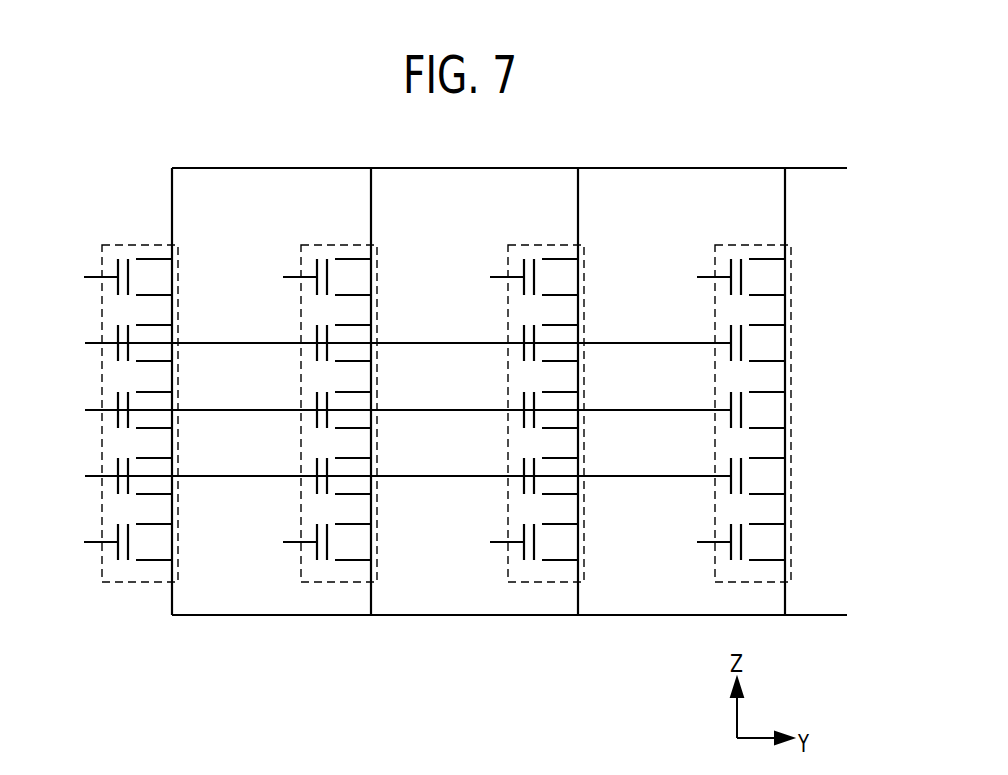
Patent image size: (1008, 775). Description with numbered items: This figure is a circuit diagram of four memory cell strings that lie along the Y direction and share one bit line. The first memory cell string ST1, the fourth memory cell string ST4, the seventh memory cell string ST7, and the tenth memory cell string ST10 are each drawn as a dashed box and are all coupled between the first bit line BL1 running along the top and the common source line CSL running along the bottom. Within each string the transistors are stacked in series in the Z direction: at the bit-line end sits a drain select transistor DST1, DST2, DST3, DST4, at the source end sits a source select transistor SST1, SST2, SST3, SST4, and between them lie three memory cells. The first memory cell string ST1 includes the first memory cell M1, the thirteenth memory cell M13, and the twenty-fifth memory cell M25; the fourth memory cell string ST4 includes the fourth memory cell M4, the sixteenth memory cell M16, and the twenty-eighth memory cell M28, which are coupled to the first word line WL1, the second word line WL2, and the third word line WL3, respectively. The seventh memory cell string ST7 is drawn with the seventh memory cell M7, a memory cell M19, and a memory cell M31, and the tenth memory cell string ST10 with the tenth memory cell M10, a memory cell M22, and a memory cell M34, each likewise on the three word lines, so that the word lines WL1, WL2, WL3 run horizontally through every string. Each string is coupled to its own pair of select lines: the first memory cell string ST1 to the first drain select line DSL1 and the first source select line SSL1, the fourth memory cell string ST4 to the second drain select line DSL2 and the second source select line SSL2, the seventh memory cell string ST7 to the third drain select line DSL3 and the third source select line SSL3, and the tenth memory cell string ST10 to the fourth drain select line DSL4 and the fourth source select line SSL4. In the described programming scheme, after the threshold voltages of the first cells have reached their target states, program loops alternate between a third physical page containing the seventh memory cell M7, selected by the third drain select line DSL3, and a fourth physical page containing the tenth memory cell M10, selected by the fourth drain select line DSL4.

The first bit line BL1 is at (526, 172).
The common source line CSL is at (526, 618).
The first memory cell string ST1 is at (140, 243).
The fourth memory cell string ST4 is at (340, 243).
The seventh memory cell string ST7 is at (545, 243).
The tenth memory cell string ST10 is at (755, 243).
The drain select transistor DST1 is at (168, 277).
The drain select transistor DST2 is at (367, 277).
The drain select transistor DST3 is at (574, 277).
The drain select transistor DST4 is at (781, 277).
The source select transistor SST1 is at (168, 542).
The source select transistor SST2 is at (367, 542).
The source select transistor SST3 is at (574, 542).
The source select transistor SST4 is at (781, 542).
The first memory cell M1 is at (161, 472).
The fourth memory cell M4 is at (360, 472).
The seventh memory cell M7 is at (567, 472).
The tenth memory cell M10 is at (779, 472).
The thirteenth memory cell M13 is at (166, 406).
The sixteenth memory cell M16 is at (365, 406).
The memory cell transistor M19 is at (572, 406).
The memory cell transistor M22 is at (779, 406).
The twenty-fifth memory cell M25 is at (166, 340).
The twenty-eighth memory cell M28 is at (365, 340).
The memory cell transistor M31 is at (572, 340).
The memory cell transistor M34 is at (779, 340).
The first drain select line DSL1 is at (81, 277).
The second drain select line DSL2 is at (279, 277).
The third drain select line DSL3 is at (486, 277).
The fourth drain select line DSL4 is at (693, 277).
The first source select line SSL1 is at (82, 542).
The second source select line SSL2 is at (280, 542).
The third source select line SSL3 is at (486, 542).
The fourth source select line SSL4 is at (694, 542).
The first word line WL1 is at (392, 476).
The second word line WL2 is at (391, 410).
The third word line WL3 is at (391, 344).